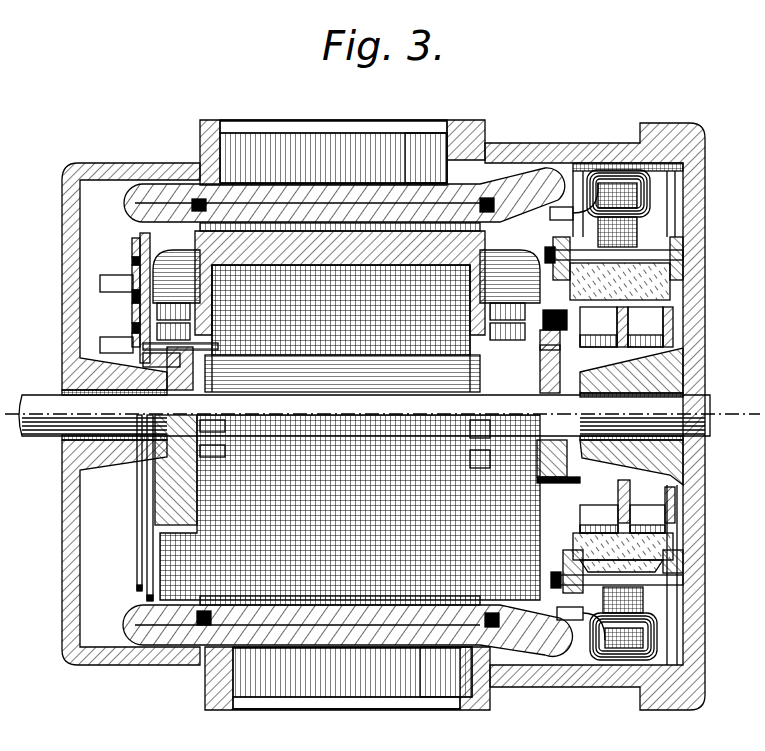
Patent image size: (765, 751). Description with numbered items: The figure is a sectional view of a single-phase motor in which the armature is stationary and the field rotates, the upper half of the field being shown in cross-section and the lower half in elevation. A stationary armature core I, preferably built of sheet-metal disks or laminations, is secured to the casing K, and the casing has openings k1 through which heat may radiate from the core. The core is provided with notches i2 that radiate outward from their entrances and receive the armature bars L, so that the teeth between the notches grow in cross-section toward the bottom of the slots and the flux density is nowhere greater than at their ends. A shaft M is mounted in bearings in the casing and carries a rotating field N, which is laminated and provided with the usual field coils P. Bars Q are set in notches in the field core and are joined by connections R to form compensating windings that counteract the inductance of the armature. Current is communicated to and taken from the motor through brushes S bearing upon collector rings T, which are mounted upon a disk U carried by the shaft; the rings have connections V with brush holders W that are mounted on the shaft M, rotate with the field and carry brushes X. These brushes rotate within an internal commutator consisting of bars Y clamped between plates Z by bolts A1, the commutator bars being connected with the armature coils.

The casing K is at (517, 150).
The armature bars L is at (205, 152).
The armature core I is at (334, 145).
The notches i2 is at (408, 135).
The openings k1 is at (257, 120).
The connections R is at (185, 210).
The bars Q is at (128, 480).
The rotating field N is at (338, 442).
The field coils P is at (172, 262).
The disk U is at (140, 237).
The collector rings T is at (132, 267).
The brushes S is at (112, 337).
The shaft M is at (34, 397).
The connections V is at (363, 379).
The brush holders W is at (552, 310).
The brushes X is at (627, 420).
The commutator bars Y is at (670, 285).
The plates Z is at (713, 567).
The bolts A1 is at (650, 215).